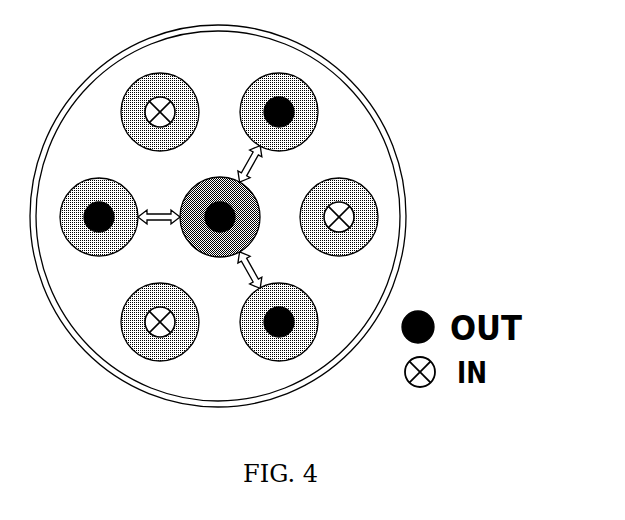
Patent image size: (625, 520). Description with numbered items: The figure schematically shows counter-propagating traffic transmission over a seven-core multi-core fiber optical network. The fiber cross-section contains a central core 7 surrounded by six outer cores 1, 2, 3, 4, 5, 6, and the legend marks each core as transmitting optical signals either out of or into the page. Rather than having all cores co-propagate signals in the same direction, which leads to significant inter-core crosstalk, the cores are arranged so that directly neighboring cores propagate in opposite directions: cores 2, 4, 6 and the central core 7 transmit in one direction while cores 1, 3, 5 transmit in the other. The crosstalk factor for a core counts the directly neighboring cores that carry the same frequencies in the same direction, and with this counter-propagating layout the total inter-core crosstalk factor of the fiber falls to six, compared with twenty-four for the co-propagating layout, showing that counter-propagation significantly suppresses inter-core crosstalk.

The core 1 is at (160, 99).
The core 2 is at (279, 101).
The core 3 is at (339, 203).
The core 4 is at (281, 312).
The core 5 is at (160, 312).
The core 6 is at (99, 203).
The core 7 is at (202, 217).